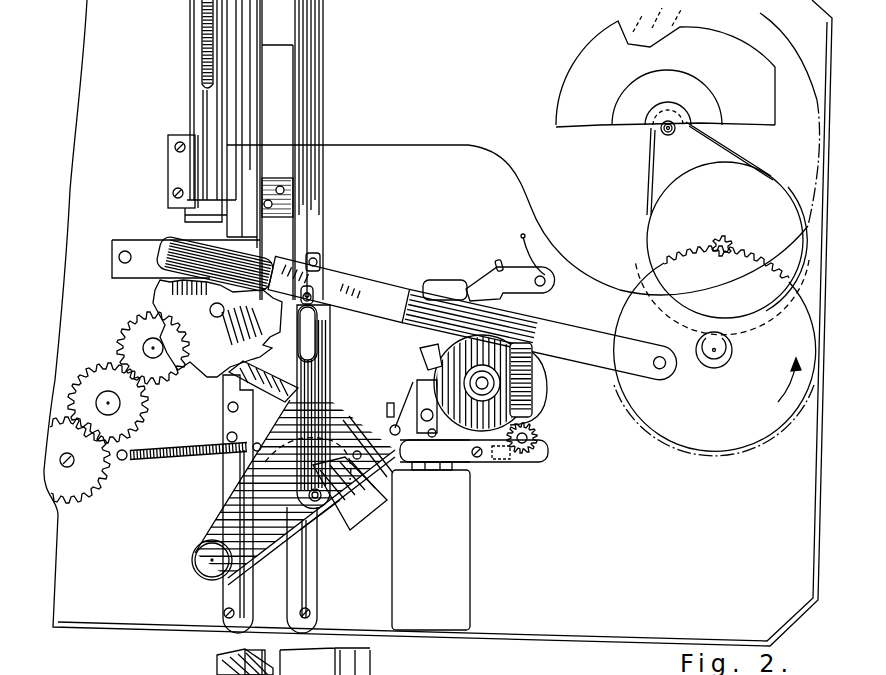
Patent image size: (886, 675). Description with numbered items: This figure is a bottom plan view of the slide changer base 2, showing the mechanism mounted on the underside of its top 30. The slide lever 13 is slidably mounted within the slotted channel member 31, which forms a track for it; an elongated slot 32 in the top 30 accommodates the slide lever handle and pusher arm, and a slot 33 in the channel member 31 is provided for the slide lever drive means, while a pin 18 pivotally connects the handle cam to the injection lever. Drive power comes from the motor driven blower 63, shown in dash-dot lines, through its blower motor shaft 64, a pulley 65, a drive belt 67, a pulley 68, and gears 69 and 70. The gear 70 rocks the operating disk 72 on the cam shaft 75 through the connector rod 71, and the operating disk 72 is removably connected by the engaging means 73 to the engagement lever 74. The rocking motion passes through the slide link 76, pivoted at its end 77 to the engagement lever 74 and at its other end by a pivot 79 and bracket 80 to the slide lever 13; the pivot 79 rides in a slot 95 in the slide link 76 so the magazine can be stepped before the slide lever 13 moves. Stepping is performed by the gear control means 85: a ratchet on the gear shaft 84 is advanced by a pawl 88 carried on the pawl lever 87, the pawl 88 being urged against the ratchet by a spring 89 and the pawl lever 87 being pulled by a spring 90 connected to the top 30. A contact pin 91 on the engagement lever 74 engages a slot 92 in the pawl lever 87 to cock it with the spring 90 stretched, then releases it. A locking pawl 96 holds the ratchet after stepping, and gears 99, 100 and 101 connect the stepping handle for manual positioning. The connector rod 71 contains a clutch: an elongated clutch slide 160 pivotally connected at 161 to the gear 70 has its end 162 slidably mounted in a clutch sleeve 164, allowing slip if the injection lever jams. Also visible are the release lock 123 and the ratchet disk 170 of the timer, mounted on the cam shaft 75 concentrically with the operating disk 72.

The base 2 is at (611, 524).
The slide lever 13 is at (272, 207).
The pin 18 is at (318, 515).
The top 30 is at (417, 212).
The slotted channel member 31 is at (308, 113).
The elongated slot 32 is at (290, 50).
The slot 33 is at (288, 92).
The motor driven blower 63 is at (642, 45).
The blower motor shaft 64 is at (670, 135).
The pulley 65 is at (697, 122).
The drive belt 67 is at (643, 205).
The pulley 68 is at (765, 192).
The gear 69 is at (729, 243).
The gear 70 is at (688, 258).
The connector rod 71 is at (416, 301).
The operating disk 72 is at (497, 393).
The engaging means 73 is at (430, 358).
The engagement lever 74 is at (347, 423).
The cam shaft 75 is at (478, 375).
The slide link 76 is at (320, 380).
The end 77 is at (333, 507).
The pivot 79 is at (314, 314).
The bracket 80 is at (283, 300).
The gear shaft 84 is at (214, 312).
The gear control means 85 is at (213, 378).
The pawl lever 87 is at (224, 510).
The pawl 88 is at (228, 393).
The spring 89 is at (290, 490).
The spring 90 is at (162, 460).
The contact pin 91 is at (362, 445).
The slot 92 is at (360, 454).
The slot 95 is at (312, 343).
The locking pawl 96 is at (252, 249).
The gear 99 is at (88, 487).
The gear 100 is at (97, 377).
The gear 101 is at (147, 327).
The release lock 123 is at (434, 437).
The clutch slide 160 is at (588, 337).
The pivotal connection 161 is at (658, 368).
The end 162 is at (293, 661).
The clutch sleeve 164 is at (360, 283).
The ratchet disk 170 is at (527, 376).